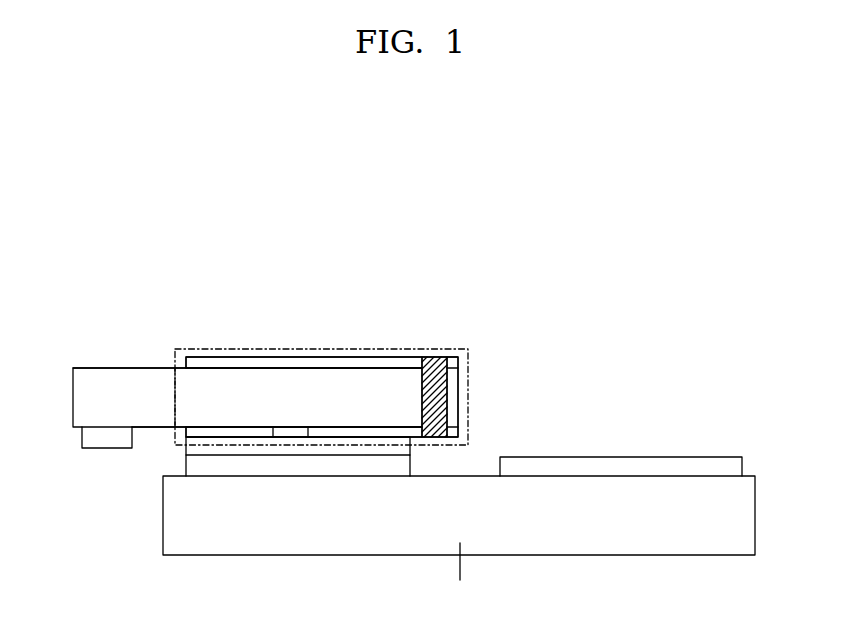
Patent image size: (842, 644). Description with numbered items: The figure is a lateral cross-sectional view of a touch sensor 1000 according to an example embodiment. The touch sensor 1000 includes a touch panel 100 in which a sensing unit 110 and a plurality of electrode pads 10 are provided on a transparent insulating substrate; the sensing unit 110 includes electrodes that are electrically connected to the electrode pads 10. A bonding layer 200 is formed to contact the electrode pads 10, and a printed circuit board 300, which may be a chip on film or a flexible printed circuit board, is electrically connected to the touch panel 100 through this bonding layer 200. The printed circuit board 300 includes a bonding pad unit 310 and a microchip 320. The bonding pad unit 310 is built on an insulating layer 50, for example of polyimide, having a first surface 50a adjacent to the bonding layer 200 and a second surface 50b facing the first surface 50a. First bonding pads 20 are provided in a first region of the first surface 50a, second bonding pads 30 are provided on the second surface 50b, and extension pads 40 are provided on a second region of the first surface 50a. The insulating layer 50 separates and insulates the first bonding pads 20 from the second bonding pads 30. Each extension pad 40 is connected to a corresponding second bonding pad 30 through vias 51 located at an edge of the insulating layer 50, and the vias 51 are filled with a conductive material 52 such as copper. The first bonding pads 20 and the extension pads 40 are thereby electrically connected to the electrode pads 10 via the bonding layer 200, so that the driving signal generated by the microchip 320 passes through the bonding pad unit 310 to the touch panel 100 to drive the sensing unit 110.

The touch sensor 1000 is at (411, 410).
The touch panel 100 is at (768, 442).
The electrode pads 10 is at (187, 464).
The sensing unit 110 is at (623, 462).
The bonding layer 200 is at (412, 452).
The first bonding pads 20 is at (184, 433).
The printed circuit board 300 is at (488, 330).
The bonding pad unit 310 is at (327, 349).
The second bonding pads 30 is at (262, 362).
The insulating layer 50 is at (73, 397).
The first surface 50a is at (142, 427).
The second surface 50b is at (128, 367).
The microchip 320 is at (88, 435).
The extension pads 40 is at (455, 432).
The conductive material 52 is at (436, 362).
The vias 51 is at (450, 387).